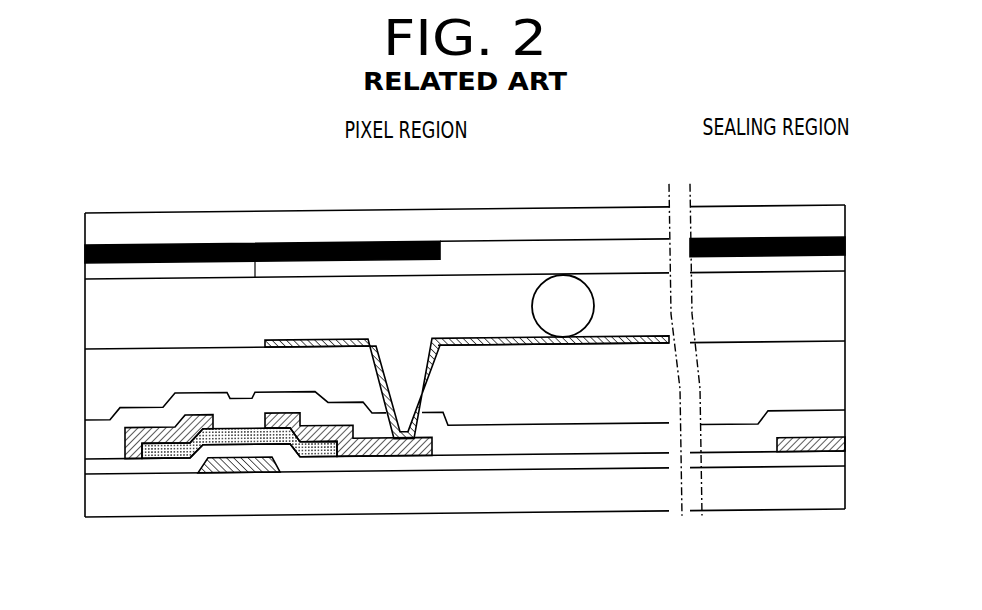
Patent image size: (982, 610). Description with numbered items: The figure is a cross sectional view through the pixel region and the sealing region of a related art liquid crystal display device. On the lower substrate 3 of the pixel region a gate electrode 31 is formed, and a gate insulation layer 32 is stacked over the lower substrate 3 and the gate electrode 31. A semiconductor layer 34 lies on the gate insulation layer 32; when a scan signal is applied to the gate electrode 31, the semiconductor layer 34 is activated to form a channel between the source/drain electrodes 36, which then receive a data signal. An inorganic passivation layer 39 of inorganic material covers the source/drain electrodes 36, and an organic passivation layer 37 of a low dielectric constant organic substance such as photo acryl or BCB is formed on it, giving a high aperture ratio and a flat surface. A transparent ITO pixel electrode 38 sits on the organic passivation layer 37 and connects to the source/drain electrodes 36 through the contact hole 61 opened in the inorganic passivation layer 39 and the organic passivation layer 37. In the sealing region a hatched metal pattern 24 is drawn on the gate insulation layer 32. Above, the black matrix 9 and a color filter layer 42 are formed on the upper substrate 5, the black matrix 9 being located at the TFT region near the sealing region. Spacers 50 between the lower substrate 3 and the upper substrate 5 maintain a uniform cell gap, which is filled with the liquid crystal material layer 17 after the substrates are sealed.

The lower substrate 3 is at (845, 505).
The upper substrate 5 is at (845, 226).
The black matrix 9 is at (352, 246).
The liquid crystal material layer 17 is at (88, 330).
The metal pattern in sealing region 24 is at (845, 448).
The gate electrode 31 is at (243, 475).
The gate insulation layer 32 is at (90, 466).
The semiconductor layer 34 is at (317, 455).
The source/drain electrodes 36 is at (125, 444).
The organic passivation layer 37 is at (845, 381).
The pixel electrode 38 is at (488, 341).
The inorganic passivation layer 39 is at (845, 426).
The color filter layer 42 is at (631, 250).
The spacers 50 is at (563, 292).
The contact hole 61 is at (402, 362).